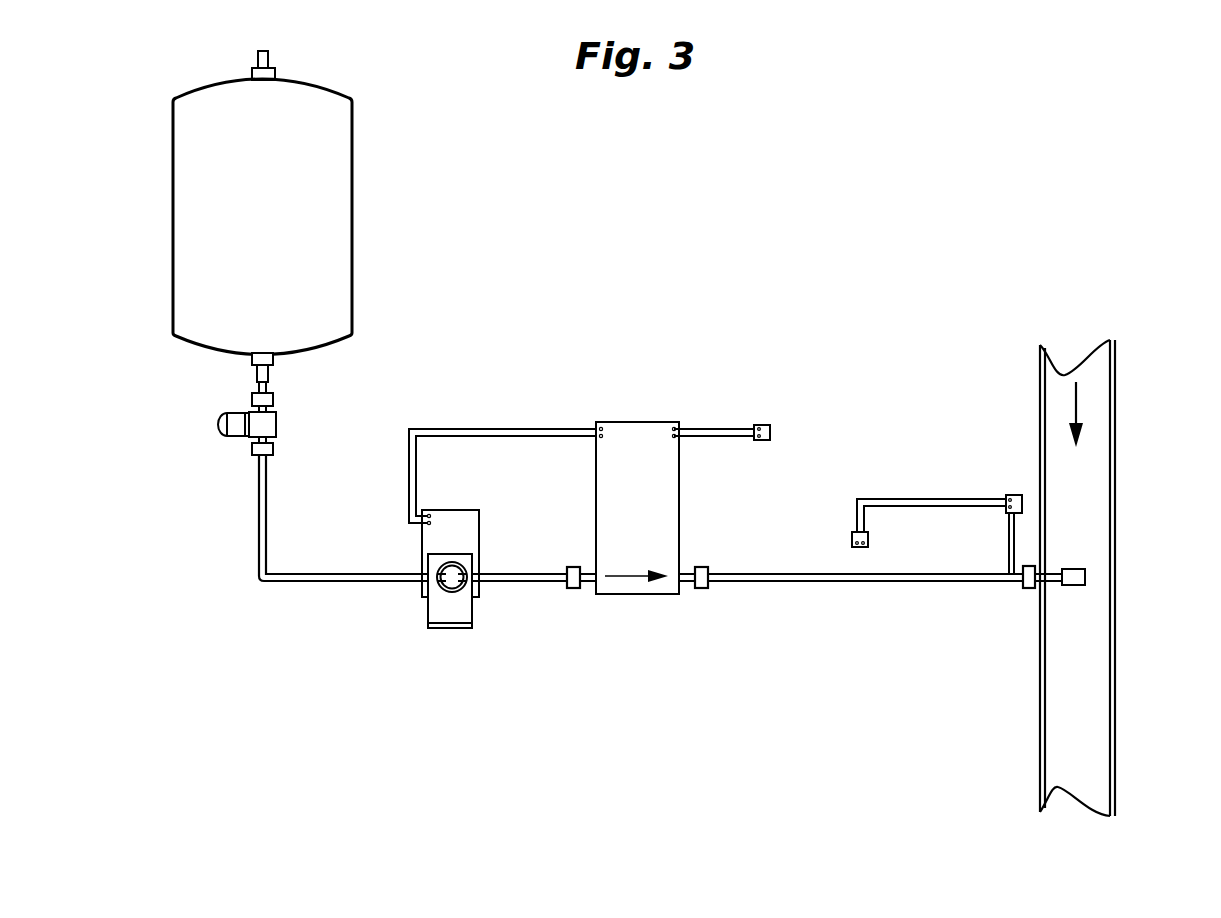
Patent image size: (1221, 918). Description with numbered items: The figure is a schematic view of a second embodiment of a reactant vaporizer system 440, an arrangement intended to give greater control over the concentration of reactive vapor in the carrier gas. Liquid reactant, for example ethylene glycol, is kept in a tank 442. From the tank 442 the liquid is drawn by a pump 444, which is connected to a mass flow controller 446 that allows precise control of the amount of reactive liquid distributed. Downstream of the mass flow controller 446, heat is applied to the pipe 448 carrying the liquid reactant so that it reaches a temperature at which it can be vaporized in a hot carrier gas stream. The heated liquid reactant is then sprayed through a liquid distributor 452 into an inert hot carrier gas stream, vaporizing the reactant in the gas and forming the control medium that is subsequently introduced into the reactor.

The reactant vaporizer system 440 is at (113, 158).
The tank 442 is at (347, 197).
The pump 444 is at (427, 615).
The mass flow controller 446 is at (608, 590).
The pipe 448 is at (822, 577).
The liquid distributor 452 is at (1078, 571).